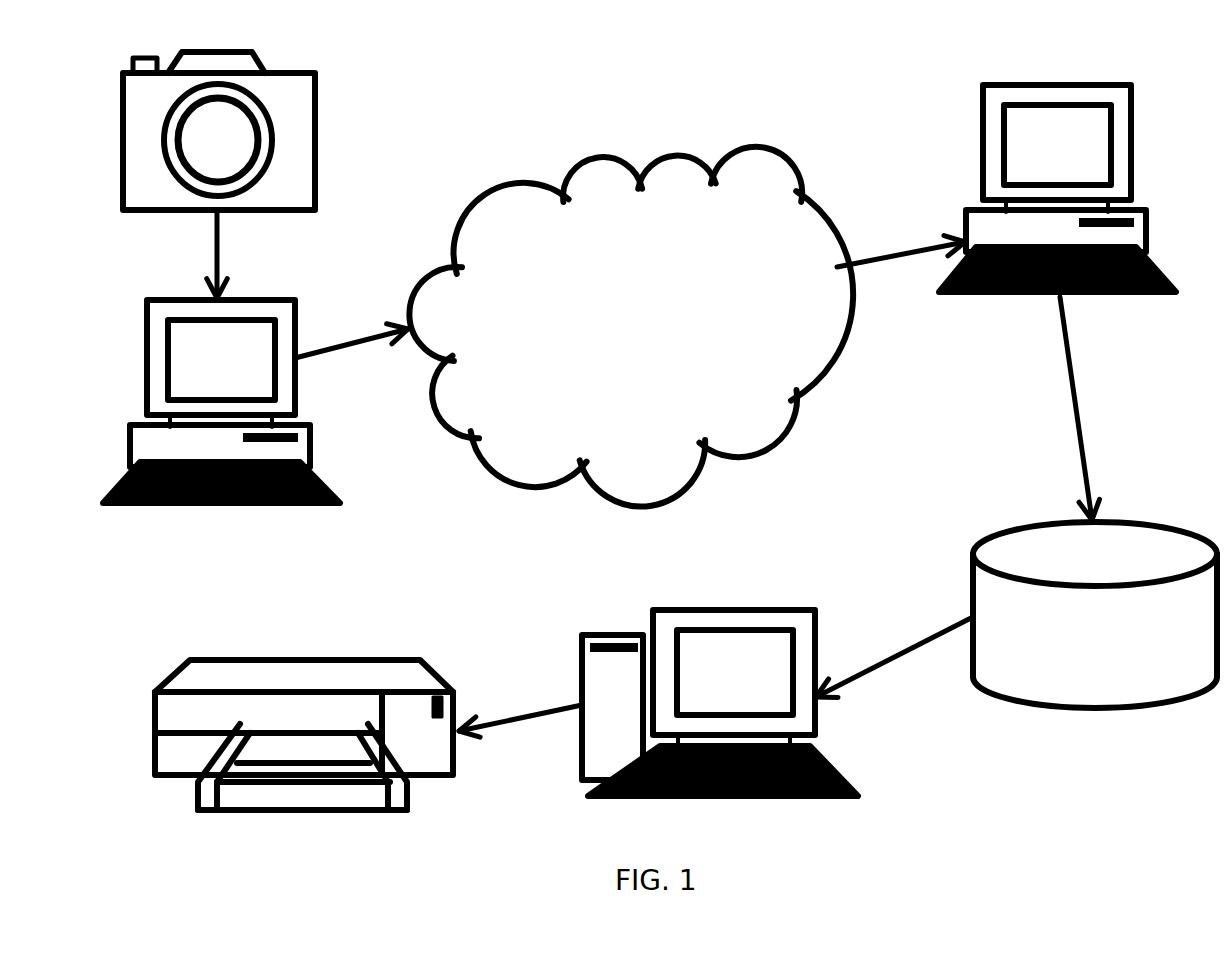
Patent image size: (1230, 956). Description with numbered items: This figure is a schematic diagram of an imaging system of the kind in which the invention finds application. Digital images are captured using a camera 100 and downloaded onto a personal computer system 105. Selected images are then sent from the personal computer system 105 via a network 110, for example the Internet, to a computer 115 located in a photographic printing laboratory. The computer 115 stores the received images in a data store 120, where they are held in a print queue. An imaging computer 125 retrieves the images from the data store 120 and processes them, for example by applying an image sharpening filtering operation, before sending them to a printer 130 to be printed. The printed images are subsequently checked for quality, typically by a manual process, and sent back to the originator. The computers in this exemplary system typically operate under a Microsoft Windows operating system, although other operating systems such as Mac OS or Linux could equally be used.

The camera 100 is at (303, 70).
The personal computer system 105 is at (233, 363).
The network 110 is at (641, 314).
The computer 115 is at (1067, 149).
The data store 120 is at (1116, 644).
The imaging computer 125 is at (741, 674).
The printer 130 is at (283, 658).